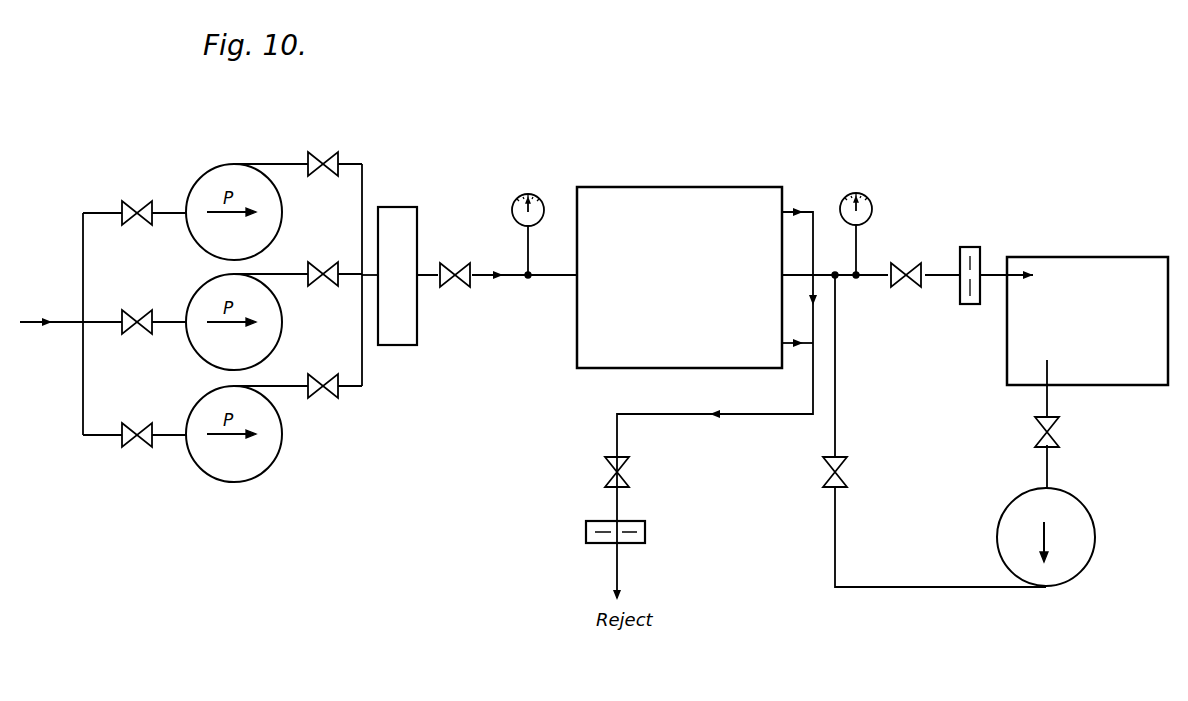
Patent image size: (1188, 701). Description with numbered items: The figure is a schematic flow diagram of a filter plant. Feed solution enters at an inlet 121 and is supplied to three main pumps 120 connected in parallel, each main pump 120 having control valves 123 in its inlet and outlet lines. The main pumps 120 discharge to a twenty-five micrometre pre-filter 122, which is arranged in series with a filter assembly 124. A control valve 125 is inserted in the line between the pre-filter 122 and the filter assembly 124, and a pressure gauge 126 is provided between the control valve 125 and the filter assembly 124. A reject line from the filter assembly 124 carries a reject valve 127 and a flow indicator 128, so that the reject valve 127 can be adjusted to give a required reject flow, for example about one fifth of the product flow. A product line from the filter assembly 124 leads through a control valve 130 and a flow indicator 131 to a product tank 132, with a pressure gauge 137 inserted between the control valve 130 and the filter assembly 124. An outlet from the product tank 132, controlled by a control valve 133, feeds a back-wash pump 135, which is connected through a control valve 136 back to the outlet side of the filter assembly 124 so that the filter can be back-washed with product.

The main pump 120 is at (221, 175).
The inlet 121 is at (24, 329).
The pre-filter 122 is at (411, 344).
The control valve 123 is at (134, 208).
The filter assembly 124 is at (684, 195).
The control valve 125 is at (458, 287).
The pressure gauge 126 is at (541, 200).
The reject valve 127 is at (628, 480).
The flow indicator 128 is at (586, 534).
The control valve 130 is at (913, 287).
The flow indicator 131 is at (972, 247).
The product tank 132 is at (1071, 260).
The control valve 133 is at (1055, 440).
The back-wash pump 135 is at (1083, 520).
The control valve 136 is at (846, 480).
The pressure gauge 137 is at (874, 206).